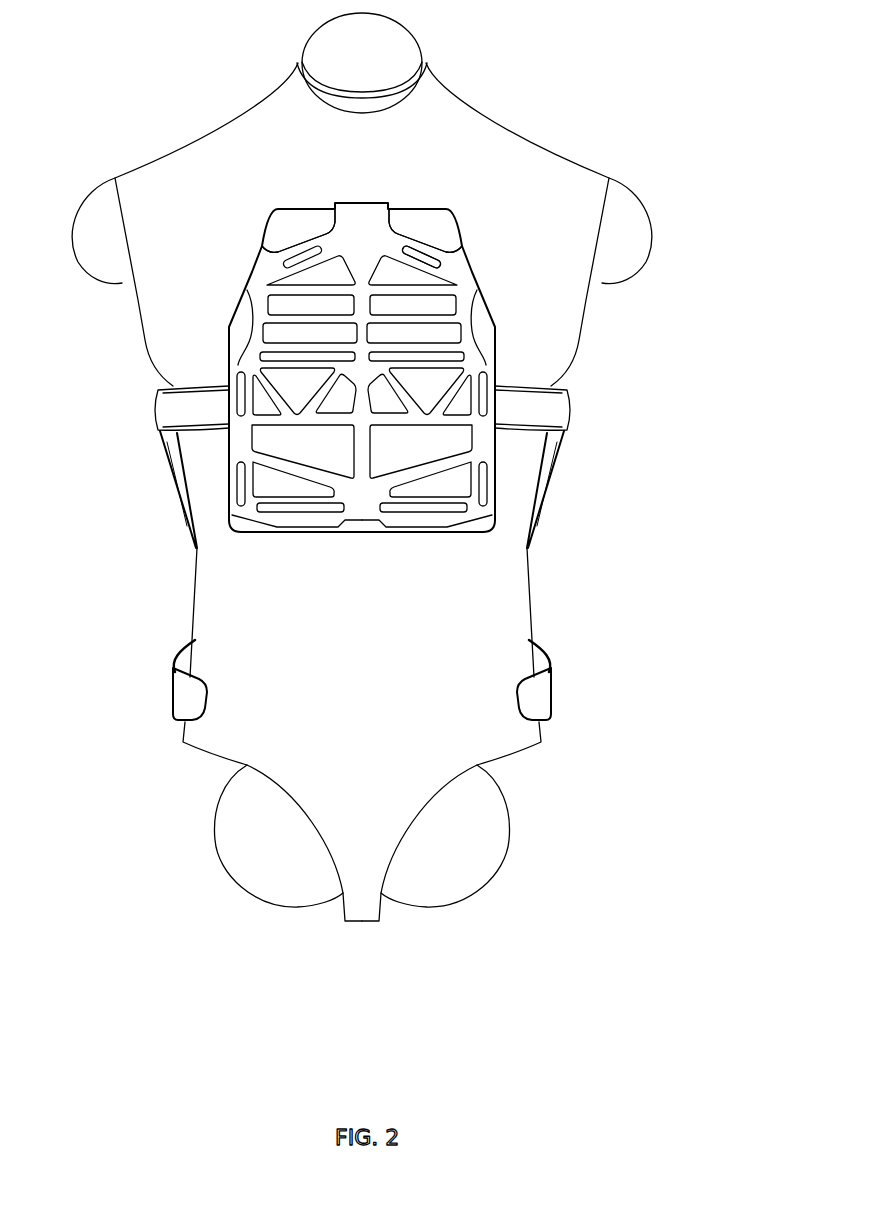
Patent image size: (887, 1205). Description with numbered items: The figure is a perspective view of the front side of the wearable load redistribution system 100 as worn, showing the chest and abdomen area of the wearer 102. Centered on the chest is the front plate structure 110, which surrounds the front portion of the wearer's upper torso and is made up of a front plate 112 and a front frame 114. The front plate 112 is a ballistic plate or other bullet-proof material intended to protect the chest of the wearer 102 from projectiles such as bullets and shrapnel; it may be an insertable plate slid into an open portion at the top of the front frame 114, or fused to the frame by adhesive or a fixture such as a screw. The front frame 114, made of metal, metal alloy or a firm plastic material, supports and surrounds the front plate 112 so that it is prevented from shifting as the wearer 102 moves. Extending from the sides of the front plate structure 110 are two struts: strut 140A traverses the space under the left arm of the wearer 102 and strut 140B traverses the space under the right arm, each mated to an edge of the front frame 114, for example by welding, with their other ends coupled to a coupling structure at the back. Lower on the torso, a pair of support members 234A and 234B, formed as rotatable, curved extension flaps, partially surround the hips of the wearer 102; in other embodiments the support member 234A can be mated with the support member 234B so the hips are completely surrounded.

The wearable load redistribution system 100 is at (79, 332).
The wearer 102 is at (497, 123).
The front plate structure 110 is at (282, 210).
The front plate 112 is at (313, 218).
The front frame 114 is at (392, 233).
The strut 140A is at (560, 418).
The strut 140B is at (167, 417).
The support member 234A is at (542, 698).
The support member 234B is at (185, 700).